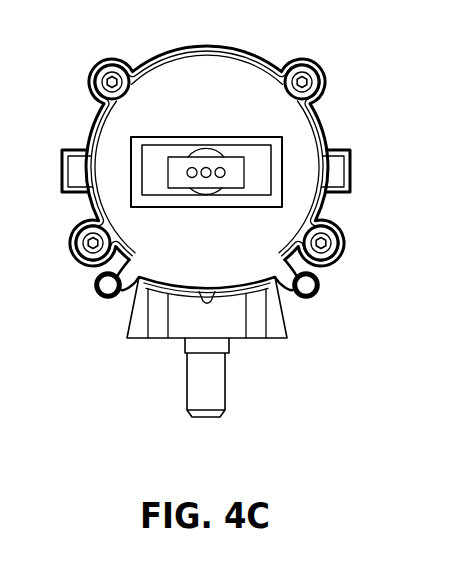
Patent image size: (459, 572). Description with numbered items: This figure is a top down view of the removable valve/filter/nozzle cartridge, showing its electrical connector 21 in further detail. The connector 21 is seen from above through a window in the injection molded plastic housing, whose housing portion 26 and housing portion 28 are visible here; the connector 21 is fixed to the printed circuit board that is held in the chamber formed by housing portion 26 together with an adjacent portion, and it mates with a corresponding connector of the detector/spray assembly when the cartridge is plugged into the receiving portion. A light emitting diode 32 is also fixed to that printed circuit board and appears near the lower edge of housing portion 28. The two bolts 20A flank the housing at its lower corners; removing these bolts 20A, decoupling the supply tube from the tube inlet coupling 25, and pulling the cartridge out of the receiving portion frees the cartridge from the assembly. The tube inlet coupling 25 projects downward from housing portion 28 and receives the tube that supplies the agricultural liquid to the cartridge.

The electrical connector 21 is at (232, 167).
The housing portion 26 is at (284, 175).
The bolts 20A is at (103, 285).
The housing portion 28 is at (132, 322).
The light emitting diode 32 is at (204, 299).
The tube inlet coupling 25 is at (212, 373).